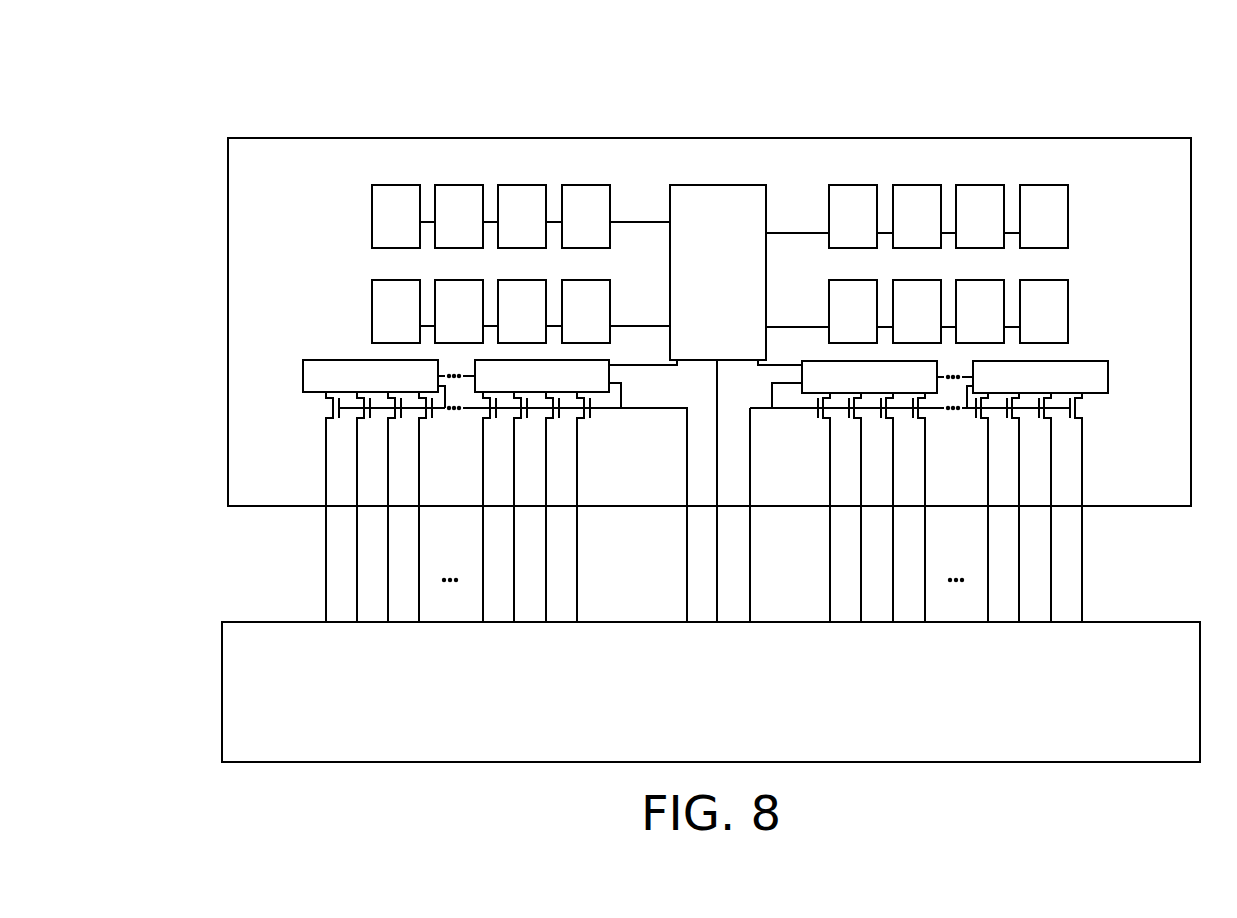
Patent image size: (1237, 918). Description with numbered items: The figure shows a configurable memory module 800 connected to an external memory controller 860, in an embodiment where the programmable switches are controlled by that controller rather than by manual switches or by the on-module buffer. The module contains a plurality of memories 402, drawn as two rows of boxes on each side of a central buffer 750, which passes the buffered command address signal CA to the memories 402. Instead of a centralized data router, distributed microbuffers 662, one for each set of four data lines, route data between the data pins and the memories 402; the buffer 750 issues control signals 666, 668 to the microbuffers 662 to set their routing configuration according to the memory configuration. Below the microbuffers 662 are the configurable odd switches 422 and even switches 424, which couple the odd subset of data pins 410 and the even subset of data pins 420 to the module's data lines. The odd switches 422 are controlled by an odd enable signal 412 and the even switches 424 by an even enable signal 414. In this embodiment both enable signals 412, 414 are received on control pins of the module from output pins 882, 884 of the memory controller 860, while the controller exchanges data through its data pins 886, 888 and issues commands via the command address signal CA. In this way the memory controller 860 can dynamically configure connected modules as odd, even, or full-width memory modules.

The configurable memory module 800 is at (335, 103).
The memory 402 is at (720, 264).
The buffer 750 is at (700, 266).
The microbuffer 662 is at (368, 385).
The control signal 666 is at (636, 365).
The control signal 668 is at (794, 365).
The odd switch 422 is at (326, 417).
The even switch 424 is at (1082, 417).
The odd enable signal 412 is at (650, 408).
The even enable signal 414 is at (783, 408).
The odd subset of data pins 410 is at (240, 588).
The even subset of data pins 420 is at (1134, 588).
The memory controller 860 is at (782, 747).
The output pin 882 is at (654, 695).
The output pin 884 is at (750, 695).
The data pins 886 is at (420, 675).
The data pins 888 is at (949, 677).